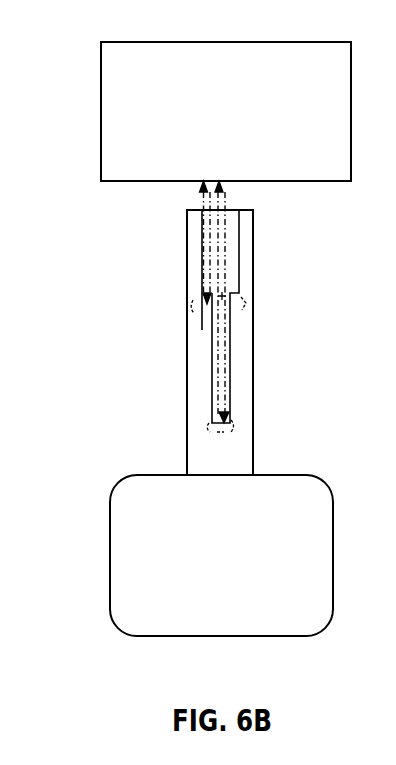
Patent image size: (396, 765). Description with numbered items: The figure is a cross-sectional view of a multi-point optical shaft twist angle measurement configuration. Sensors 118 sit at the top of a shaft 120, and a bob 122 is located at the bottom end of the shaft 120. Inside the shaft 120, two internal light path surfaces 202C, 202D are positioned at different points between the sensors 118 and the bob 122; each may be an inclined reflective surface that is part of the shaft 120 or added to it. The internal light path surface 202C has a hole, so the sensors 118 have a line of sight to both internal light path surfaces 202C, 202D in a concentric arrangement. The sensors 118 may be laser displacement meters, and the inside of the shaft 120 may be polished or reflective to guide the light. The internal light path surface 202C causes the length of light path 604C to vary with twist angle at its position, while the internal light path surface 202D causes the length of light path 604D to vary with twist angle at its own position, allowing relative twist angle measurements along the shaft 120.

The sensors 118 is at (173, 42).
The shaft 120 is at (253, 400).
The bob 122 is at (123, 632).
The light path 604C is at (203, 193).
The light path 604D is at (228, 217).
The internal light path surface 202C is at (248, 297).
The internal light path surface 202D is at (210, 427).